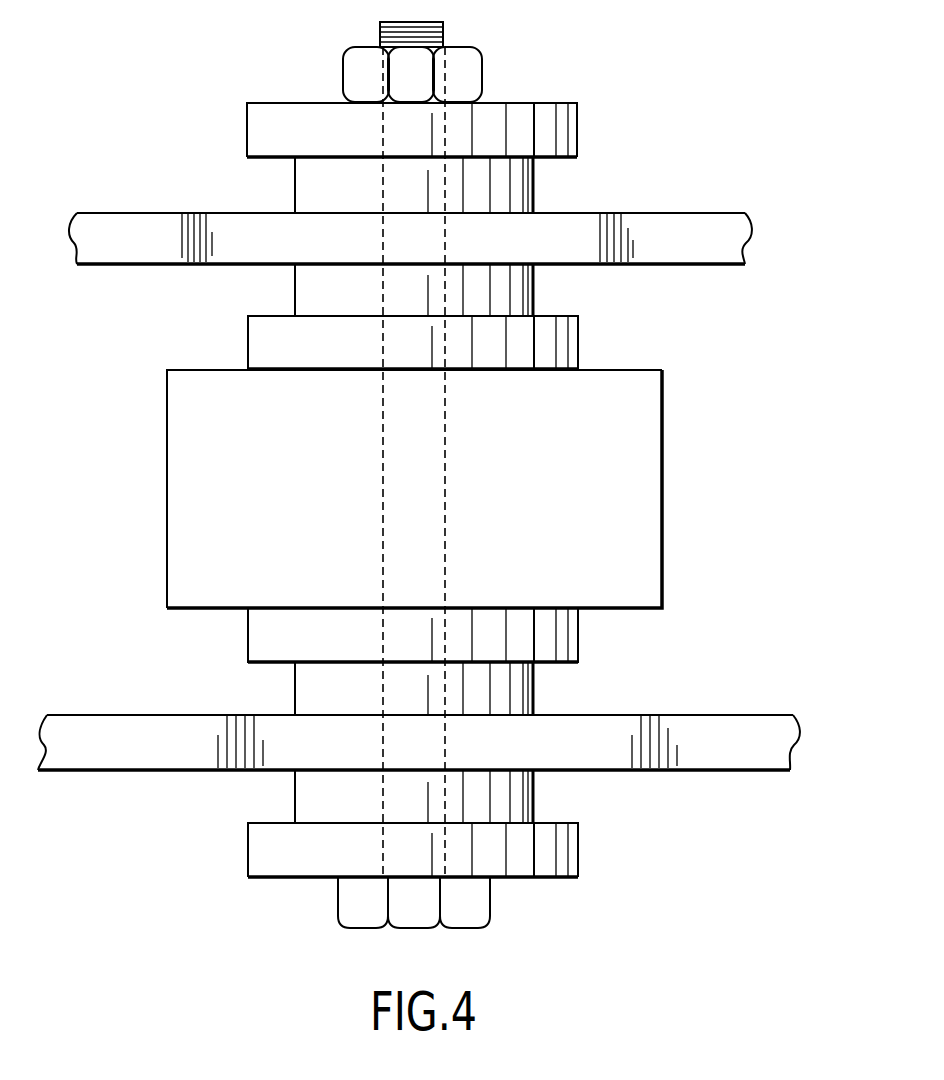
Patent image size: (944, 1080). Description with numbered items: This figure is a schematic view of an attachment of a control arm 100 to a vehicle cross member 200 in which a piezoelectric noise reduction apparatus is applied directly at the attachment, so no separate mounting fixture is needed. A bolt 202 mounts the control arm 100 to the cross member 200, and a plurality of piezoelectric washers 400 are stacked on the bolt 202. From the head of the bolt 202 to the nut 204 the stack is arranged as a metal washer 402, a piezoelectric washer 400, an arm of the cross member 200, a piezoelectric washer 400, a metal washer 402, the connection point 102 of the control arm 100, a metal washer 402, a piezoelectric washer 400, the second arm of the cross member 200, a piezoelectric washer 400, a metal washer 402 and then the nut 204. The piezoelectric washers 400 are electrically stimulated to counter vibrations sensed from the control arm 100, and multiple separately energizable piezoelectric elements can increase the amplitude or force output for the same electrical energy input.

The control arm 100 is at (575, 575).
The connection point 102 is at (662, 497).
The cross member 200 is at (133, 264).
The bolt 202 is at (490, 897).
The nut 204 is at (483, 82).
The piezoelectric washer 400 is at (533, 190).
The metal washer 402 is at (577, 132).